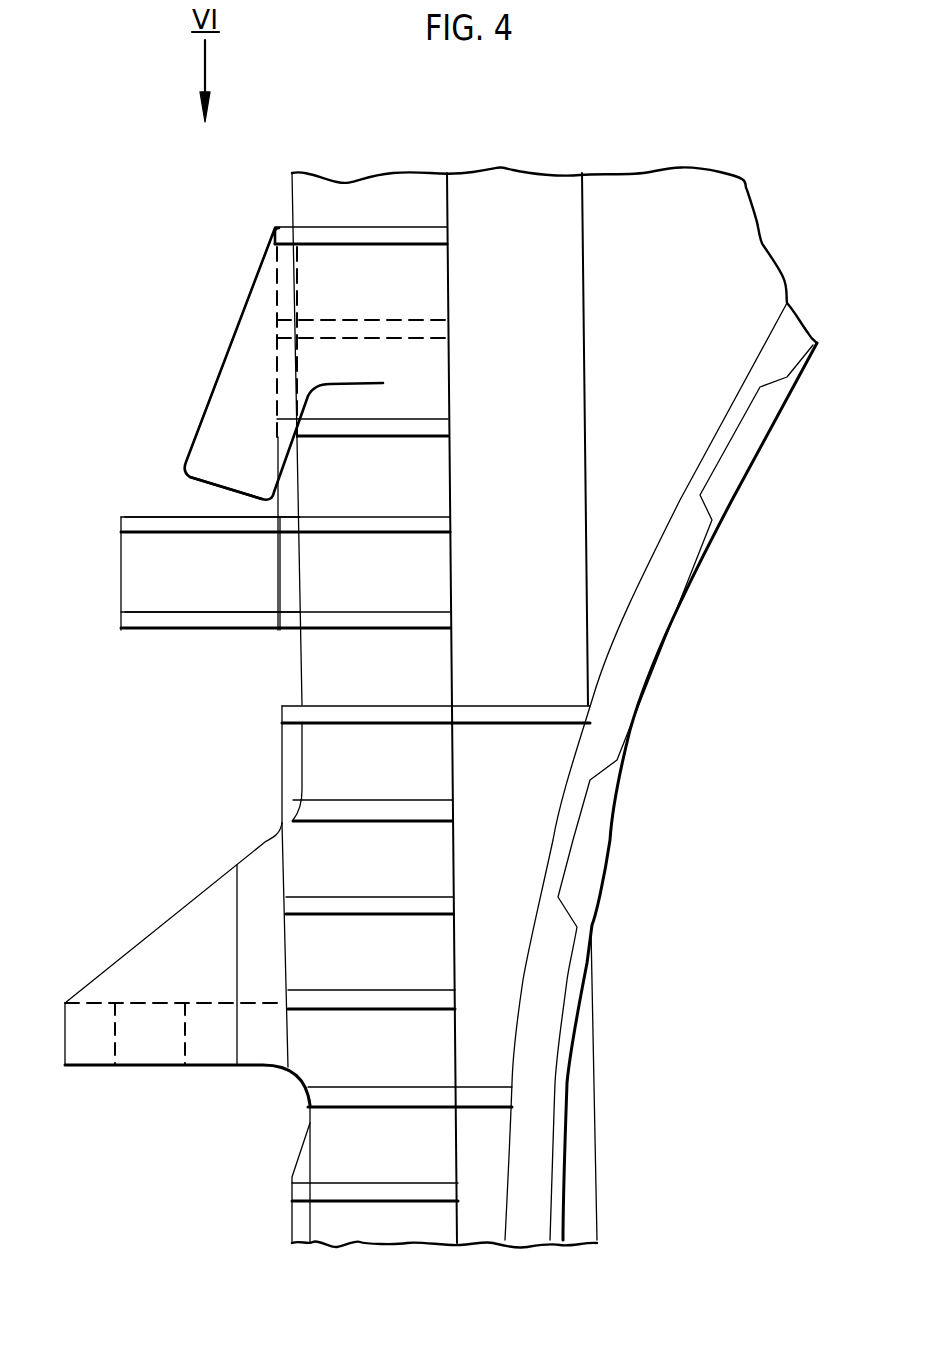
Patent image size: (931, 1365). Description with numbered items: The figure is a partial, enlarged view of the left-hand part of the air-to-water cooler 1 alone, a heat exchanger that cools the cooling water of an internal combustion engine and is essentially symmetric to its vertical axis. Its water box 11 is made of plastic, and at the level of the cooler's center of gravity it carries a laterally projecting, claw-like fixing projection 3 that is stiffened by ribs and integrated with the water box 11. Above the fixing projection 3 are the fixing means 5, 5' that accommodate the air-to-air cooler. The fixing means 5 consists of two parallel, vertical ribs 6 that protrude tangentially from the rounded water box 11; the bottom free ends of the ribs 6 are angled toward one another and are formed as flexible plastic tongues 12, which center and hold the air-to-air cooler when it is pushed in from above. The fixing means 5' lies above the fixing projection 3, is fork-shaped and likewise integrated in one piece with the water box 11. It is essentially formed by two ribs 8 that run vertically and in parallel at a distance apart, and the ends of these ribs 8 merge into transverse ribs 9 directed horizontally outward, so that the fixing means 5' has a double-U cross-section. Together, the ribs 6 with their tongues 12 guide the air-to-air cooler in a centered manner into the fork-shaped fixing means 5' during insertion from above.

The air-to-water cooler 1 is at (185, 206).
The fixing projection 3 is at (97, 1052).
The fixing means 5 is at (273, 363).
The fixing means 5' is at (246, 573).
The rib 6 is at (312, 288).
The rib 8 is at (248, 568).
The transverse rib 9 is at (158, 523).
The water box 11 is at (322, 678).
The flexible plastic tongue 12 is at (233, 445).